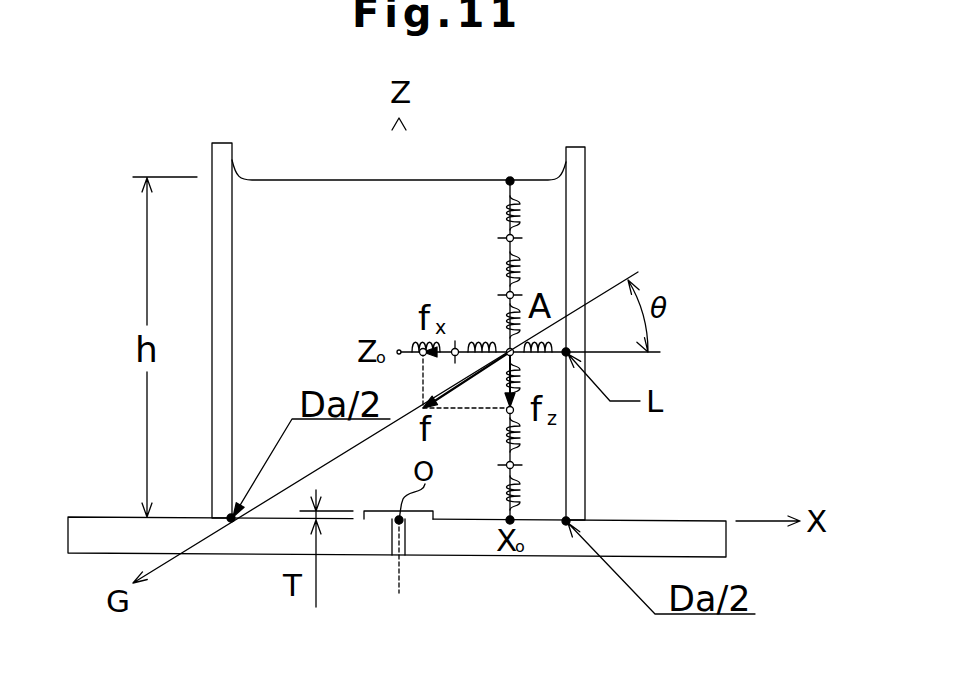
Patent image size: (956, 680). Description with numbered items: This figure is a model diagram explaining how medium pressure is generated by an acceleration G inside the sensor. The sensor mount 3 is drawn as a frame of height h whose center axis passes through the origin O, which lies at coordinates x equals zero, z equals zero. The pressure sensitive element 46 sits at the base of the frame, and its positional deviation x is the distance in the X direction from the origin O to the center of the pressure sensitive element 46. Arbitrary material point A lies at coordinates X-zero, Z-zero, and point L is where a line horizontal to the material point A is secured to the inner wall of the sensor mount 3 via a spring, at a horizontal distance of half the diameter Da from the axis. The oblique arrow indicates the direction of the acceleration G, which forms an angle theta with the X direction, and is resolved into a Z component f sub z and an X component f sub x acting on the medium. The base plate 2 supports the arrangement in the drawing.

The sensor mount 3 is at (586, 173).
The base plate 2 is at (655, 527).
The pressure sensitive element 46 is at (418, 520).